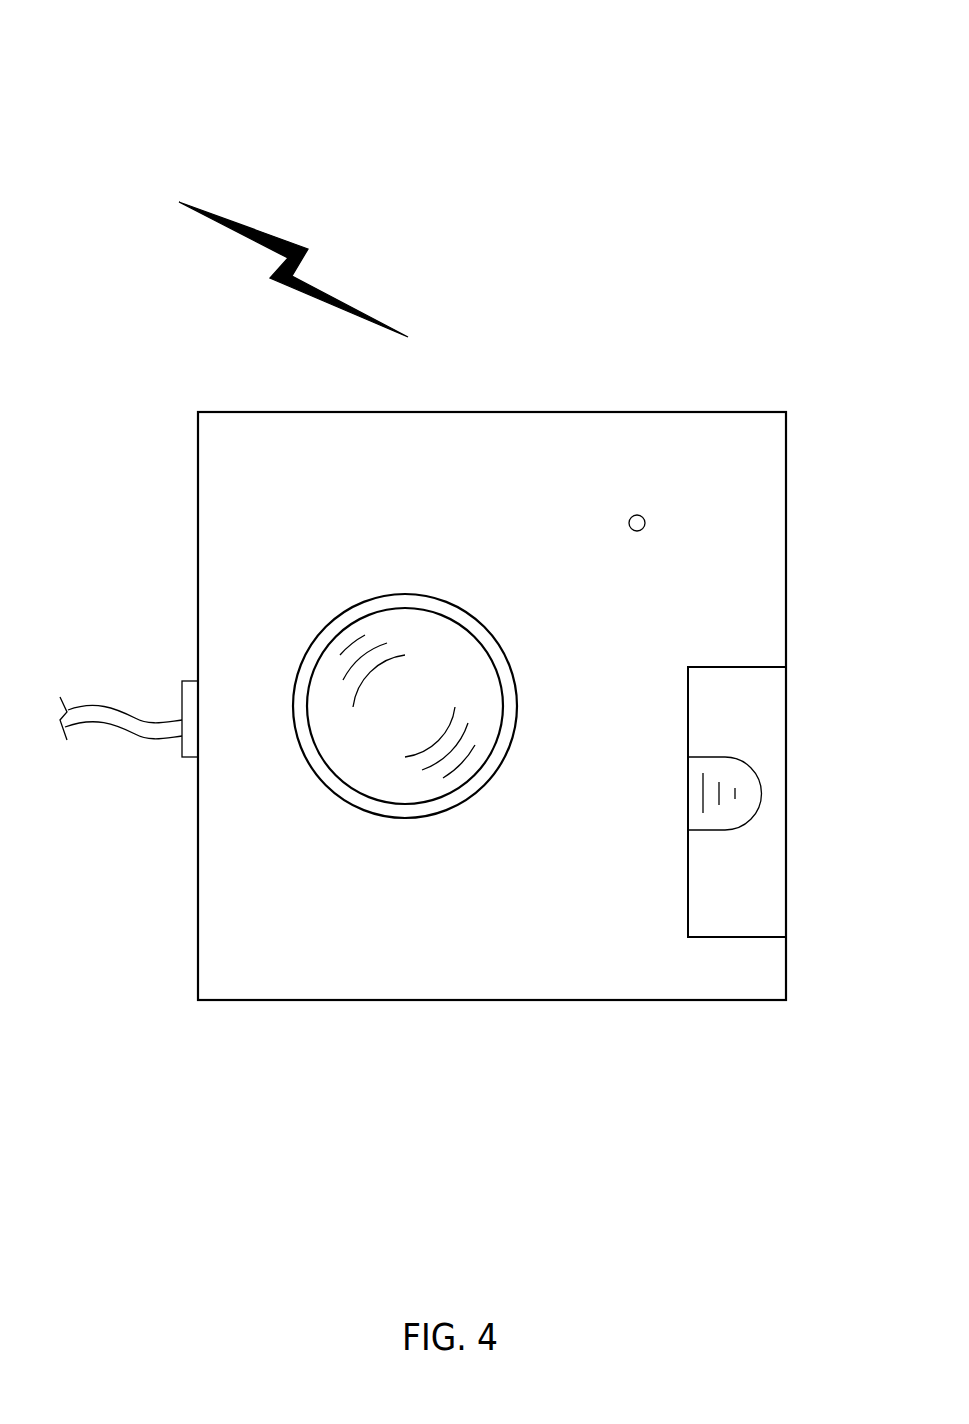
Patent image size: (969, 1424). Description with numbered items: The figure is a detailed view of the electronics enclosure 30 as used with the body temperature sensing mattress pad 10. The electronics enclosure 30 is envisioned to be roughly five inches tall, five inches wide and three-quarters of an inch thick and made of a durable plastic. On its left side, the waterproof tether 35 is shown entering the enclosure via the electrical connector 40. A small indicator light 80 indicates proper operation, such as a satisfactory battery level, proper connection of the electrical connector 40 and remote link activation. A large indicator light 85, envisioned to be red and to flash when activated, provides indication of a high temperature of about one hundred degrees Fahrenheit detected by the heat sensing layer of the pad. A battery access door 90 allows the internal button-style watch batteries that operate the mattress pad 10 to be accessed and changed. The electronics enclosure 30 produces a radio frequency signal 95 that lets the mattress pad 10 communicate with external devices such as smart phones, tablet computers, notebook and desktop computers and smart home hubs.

The body temperature sensing mattress pad 10 is at (108, 186).
The electronics enclosure 30 is at (198, 1000).
The waterproof tether 35 is at (92, 713).
The electrical connector 40 is at (190, 690).
The small indicator light 80 is at (633, 527).
The large indicator light 85 is at (421, 676).
The battery access door 90 is at (736, 729).
The radio frequency (RF) signal 95 is at (310, 280).